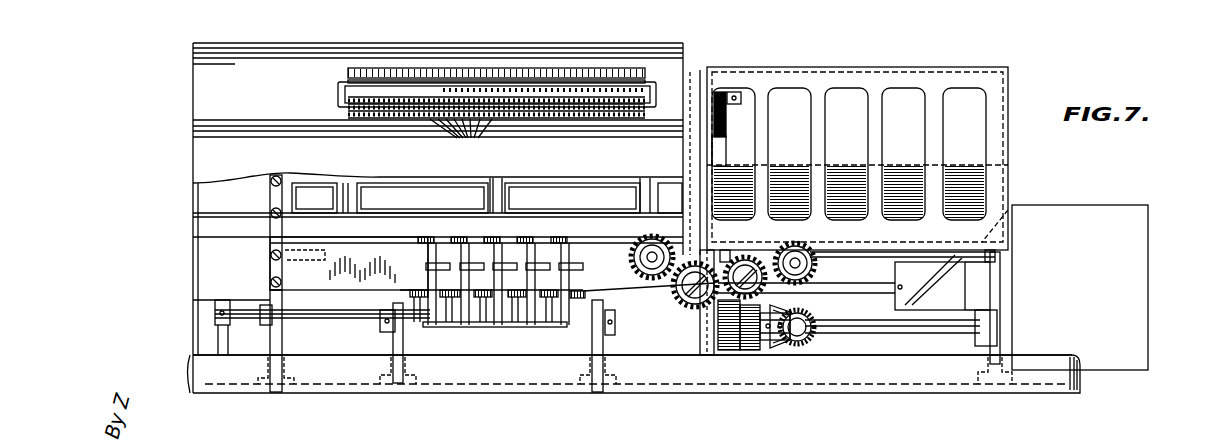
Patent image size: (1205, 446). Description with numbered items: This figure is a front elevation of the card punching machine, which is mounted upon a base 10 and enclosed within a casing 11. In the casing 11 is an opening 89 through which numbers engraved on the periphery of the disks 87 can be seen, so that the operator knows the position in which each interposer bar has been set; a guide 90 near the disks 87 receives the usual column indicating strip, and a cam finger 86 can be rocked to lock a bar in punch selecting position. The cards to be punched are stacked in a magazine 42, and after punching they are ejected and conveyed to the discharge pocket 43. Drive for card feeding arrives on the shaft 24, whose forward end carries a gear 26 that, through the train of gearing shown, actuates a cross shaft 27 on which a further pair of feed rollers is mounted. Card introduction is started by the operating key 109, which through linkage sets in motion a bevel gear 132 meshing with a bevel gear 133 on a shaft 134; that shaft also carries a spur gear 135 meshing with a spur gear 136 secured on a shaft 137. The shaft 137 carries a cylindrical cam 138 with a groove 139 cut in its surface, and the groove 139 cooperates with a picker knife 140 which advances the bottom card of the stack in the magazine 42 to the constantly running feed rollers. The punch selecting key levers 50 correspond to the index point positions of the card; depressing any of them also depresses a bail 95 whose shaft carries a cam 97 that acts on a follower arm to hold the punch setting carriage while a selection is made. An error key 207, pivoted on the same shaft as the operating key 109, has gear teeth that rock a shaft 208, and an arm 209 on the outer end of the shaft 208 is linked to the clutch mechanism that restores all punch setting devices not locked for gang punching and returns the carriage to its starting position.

The casing 11 is at (266, 52).
The opening 89 is at (415, 67).
The disks 87 is at (512, 68).
The guide 90 is at (656, 92).
The cam finger 86 is at (478, 140).
The magazine 42 is at (857, 164).
The picker knife 140 is at (1010, 208).
The cross shaft 27 is at (640, 258).
The spur gear 136 is at (736, 265).
The shaft 24 is at (806, 262).
The gear 26 is at (806, 280).
The shaft 137 is at (852, 286).
The groove 139 is at (948, 280).
The cylindrical cam 138 is at (1002, 288).
The operating key 109 is at (587, 295).
The error key 207 is at (410, 296).
The shaft 208 is at (360, 318).
The arm 209 is at (216, 337).
The bail 95 is at (445, 327).
The punch selecting key levers 50 is at (522, 312).
The cam 97 is at (610, 340).
The spur gear 135 is at (736, 331).
The bevel gear 133 is at (775, 346).
The bevel gear 132 is at (812, 340).
The shaft 134 is at (898, 322).
The discharge pocket 43 is at (1140, 337).
The base 10 is at (1078, 390).